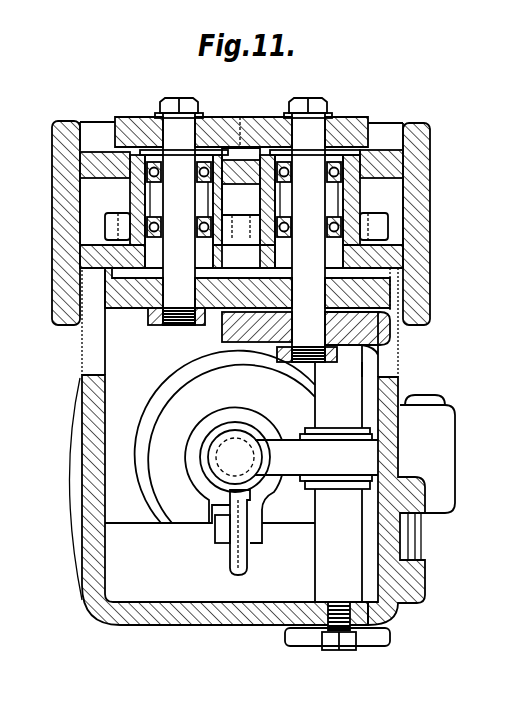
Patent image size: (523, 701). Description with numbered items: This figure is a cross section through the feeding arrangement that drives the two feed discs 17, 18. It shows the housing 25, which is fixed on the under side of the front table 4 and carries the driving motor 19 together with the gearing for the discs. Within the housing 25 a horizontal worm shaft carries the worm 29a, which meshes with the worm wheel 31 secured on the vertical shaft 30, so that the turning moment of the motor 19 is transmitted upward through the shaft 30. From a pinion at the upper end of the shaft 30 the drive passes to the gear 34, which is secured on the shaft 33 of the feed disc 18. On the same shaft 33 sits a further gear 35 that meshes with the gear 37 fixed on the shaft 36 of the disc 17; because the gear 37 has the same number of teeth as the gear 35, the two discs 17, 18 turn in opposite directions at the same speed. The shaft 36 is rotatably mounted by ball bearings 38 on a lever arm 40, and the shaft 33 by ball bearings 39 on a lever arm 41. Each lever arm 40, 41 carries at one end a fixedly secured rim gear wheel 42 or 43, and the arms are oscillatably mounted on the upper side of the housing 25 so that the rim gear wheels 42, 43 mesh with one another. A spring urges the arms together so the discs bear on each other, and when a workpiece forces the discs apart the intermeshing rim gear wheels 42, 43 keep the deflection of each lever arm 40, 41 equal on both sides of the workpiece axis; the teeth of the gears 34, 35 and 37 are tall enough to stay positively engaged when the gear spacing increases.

The front table 4 is at (55, 160).
The feed disc 17 is at (133, 122).
The feed disc 18 is at (362, 125).
The driving motor 19 is at (70, 490).
The housing 25 is at (83, 580).
The worm 29a is at (227, 478).
The vertical shaft 30 is at (365, 390).
The worm wheel 31 is at (307, 470).
The shaft of the feed disc 18 33 is at (300, 364).
The gear 34 is at (382, 357).
The gear 35 is at (245, 324).
The shaft of the disc 17 36 is at (160, 320).
The gear 37 is at (130, 308).
The ball bearings 38 is at (158, 227).
The ball bearings 39 is at (330, 228).
The lever arm 40 is at (130, 198).
The lever arm 41 is at (348, 198).
The rim gear wheel 42 is at (105, 232).
The rim gear wheel 43 is at (385, 240).